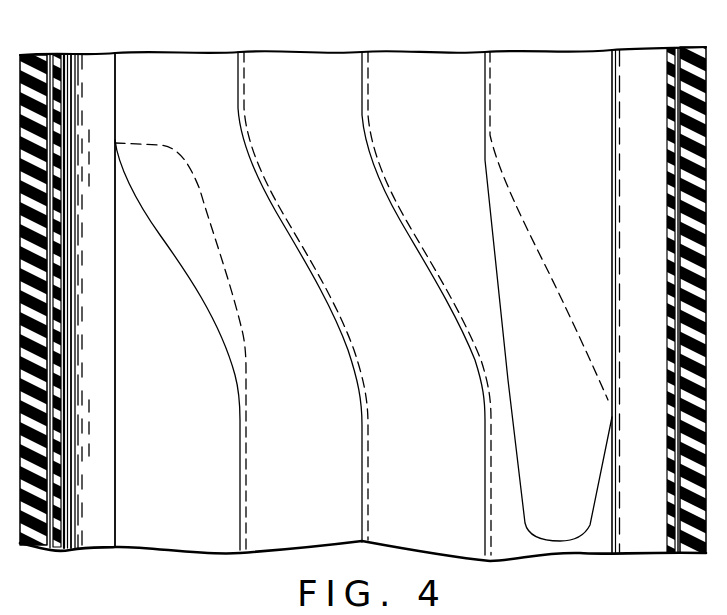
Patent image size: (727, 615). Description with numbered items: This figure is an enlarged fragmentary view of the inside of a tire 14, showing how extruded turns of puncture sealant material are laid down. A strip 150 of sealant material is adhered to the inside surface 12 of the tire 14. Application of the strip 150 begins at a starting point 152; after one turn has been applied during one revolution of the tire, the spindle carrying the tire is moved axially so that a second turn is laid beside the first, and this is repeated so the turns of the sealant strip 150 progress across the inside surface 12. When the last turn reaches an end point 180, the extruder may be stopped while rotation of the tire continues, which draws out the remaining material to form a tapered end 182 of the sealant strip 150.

The tire 14 is at (31, 64).
The inside surface 12 is at (99, 72).
The starting point 152 is at (165, 165).
The strip of sealant material 150 is at (334, 76).
The end point 180 is at (609, 113).
The tapered end 182 is at (568, 519).